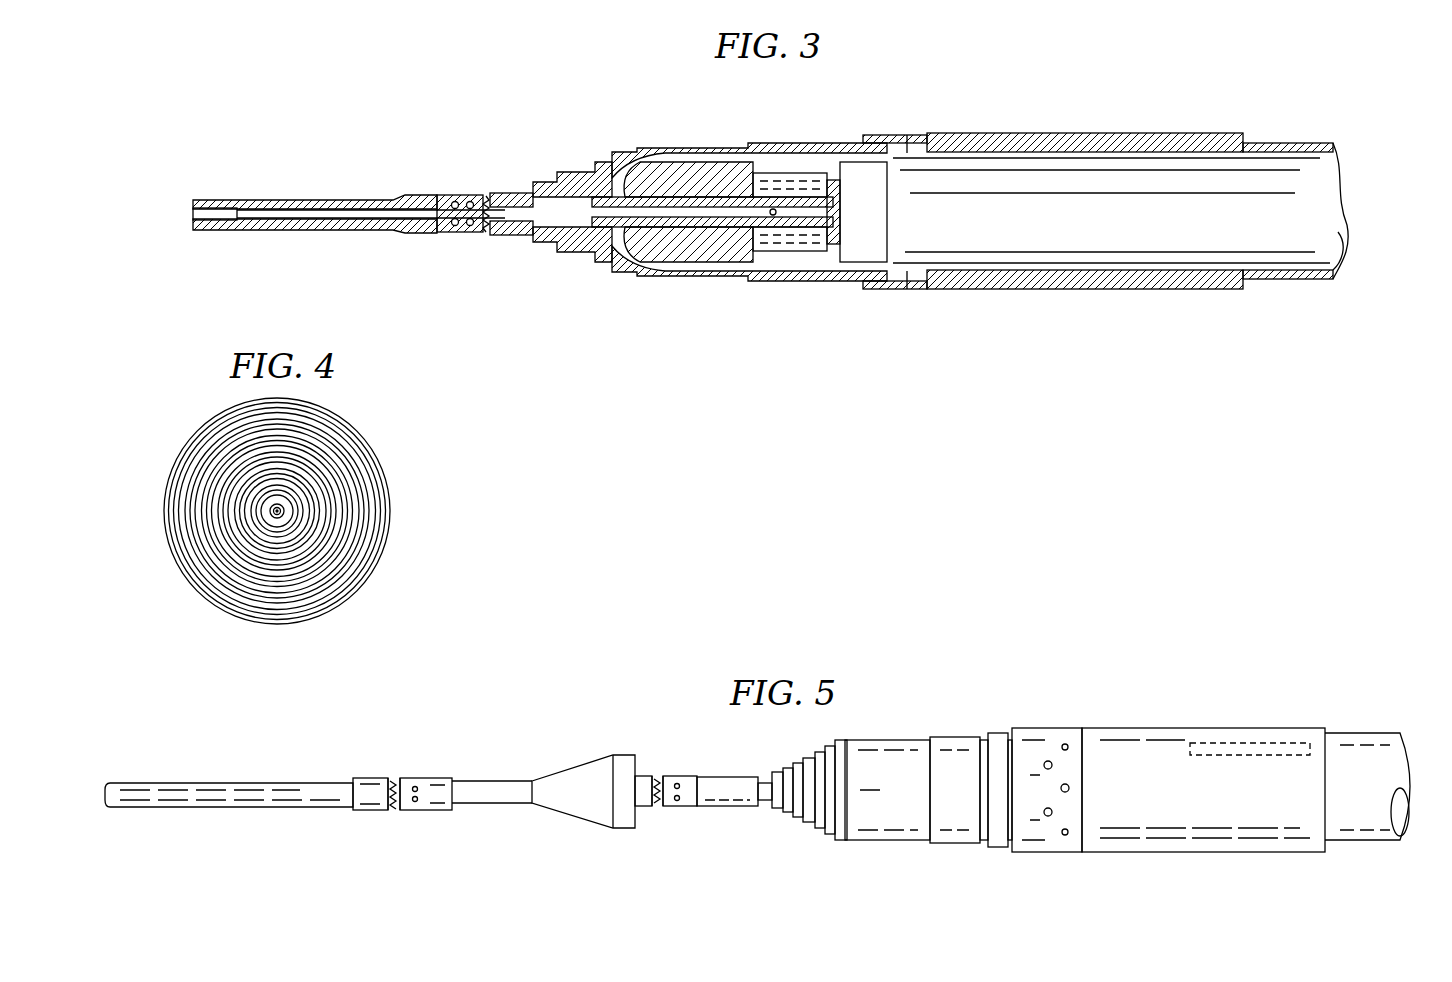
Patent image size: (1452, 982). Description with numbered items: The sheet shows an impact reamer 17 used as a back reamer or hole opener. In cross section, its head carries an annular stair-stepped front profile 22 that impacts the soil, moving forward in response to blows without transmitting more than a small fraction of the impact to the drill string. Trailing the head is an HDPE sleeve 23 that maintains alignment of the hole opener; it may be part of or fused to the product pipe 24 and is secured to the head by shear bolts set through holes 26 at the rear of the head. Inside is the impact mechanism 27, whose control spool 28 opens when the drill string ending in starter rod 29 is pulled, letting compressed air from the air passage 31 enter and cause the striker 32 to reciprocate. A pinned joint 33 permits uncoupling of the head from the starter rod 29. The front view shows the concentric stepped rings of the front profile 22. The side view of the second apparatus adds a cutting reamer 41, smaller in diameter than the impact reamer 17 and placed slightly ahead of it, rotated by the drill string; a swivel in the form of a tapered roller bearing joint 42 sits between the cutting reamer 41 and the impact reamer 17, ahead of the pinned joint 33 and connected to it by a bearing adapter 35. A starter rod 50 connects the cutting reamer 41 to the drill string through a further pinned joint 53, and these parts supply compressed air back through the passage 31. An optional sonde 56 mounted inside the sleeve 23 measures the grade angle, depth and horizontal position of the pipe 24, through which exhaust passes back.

In FIG. 3, the impact reamer 17 is at (1003, 103).
In FIG. 4, the impact reamer 17 is at (183, 437).
In FIG. 5, the impact reamer 17 is at (986, 697).
In FIG. 4, the annular stair-stepped front profile 22 is at (195, 507).
In FIG. 3, the sleeve 23 is at (1108, 133).
In FIG. 5, the sleeve 23 is at (1125, 735).
In FIG. 3, the pipe 24 is at (1290, 143).
In FIG. 5, the pipe 24 is at (1360, 735).
In FIG. 3, the holes 26 is at (905, 133).
In FIG. 3, the impact mechanism 27 is at (627, 252).
In FIG. 3, the control spool 28 is at (582, 236).
In FIG. 3, the starter rod 29 is at (290, 199).
In FIG. 4, the starter rod 29 is at (292, 510).
In FIG. 3, the air passage 31 is at (343, 209).
In FIG. 3, the striker 32 is at (655, 168).
In FIG. 3, the pinned joint 33 is at (473, 194).
In FIG. 5, the pinned joint 33 is at (680, 776).
In FIG. 5, the bearing adapter 35 is at (650, 808).
In FIG. 5, the cutting reamer 41 is at (570, 815).
In FIG. 5, the tapered roller bearing joint 42 is at (648, 768).
In FIG. 5, the starter rod 50 is at (232, 783).
In FIG. 5, the pinned joint 53 is at (398, 778).
In FIG. 5, the sonde 56 is at (1250, 742).